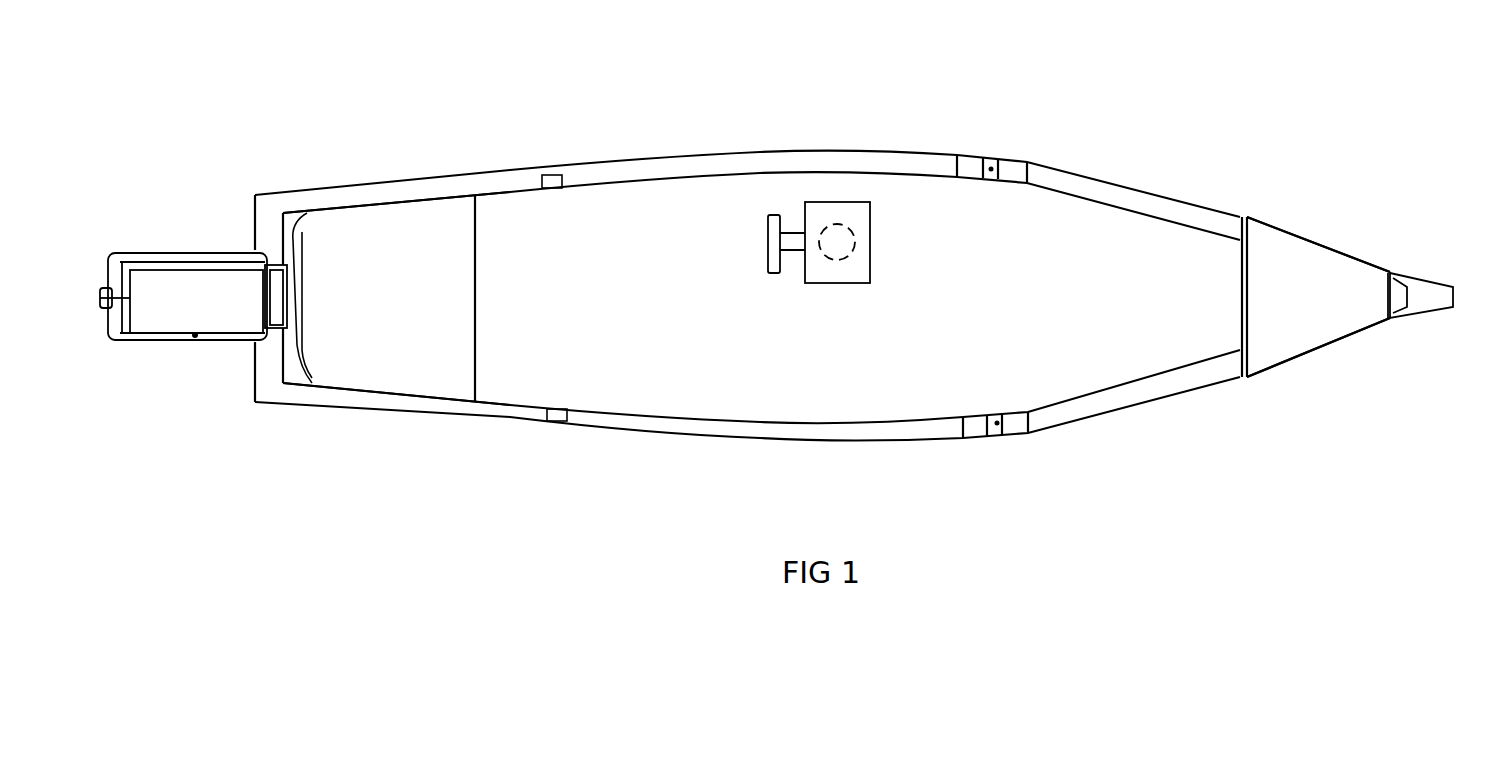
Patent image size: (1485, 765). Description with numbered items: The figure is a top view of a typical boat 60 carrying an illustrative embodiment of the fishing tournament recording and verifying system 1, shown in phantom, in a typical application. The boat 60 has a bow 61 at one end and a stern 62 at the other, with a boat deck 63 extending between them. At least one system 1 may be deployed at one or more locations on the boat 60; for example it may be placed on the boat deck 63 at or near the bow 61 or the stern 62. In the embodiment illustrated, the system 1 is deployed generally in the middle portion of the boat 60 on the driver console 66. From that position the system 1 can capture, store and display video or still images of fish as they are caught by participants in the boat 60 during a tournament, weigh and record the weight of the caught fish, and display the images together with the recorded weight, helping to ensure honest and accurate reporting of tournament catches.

The fishing tournament recording and verifying system 1 is at (880, 184).
The boat 60 is at (1080, 160).
The bow 61 is at (1442, 292).
The stern 62 is at (270, 230).
The boat deck 63 is at (422, 218).
The driver console 66 is at (880, 265).